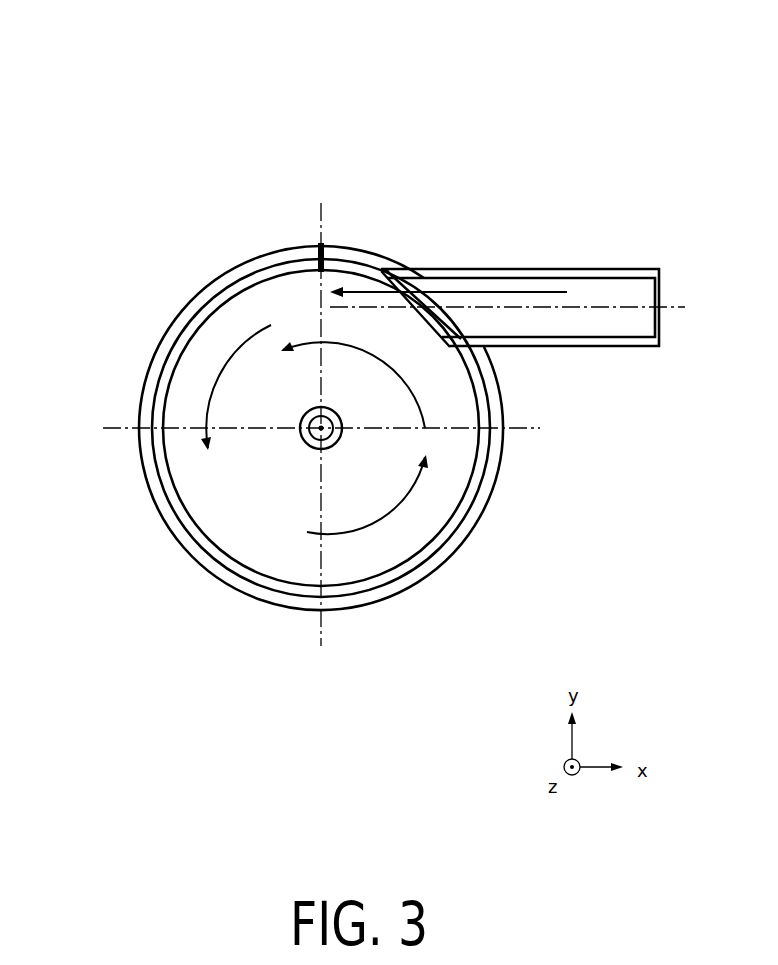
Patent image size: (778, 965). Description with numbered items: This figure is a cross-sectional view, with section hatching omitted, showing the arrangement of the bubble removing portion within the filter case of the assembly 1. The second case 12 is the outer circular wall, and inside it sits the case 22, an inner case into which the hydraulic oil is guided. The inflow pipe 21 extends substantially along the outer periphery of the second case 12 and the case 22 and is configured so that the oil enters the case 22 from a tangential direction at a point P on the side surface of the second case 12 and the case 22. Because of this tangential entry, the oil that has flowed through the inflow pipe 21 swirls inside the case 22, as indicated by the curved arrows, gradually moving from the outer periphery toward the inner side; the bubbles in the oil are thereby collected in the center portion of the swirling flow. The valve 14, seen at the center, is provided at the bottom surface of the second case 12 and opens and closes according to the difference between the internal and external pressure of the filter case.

The blower 1 is at (628, 57).
The second case 12 is at (270, 428).
The valve 14 is at (256, 428).
The inflow pipe 21 is at (507, 273).
The case 22 is at (321, 475).
The point P is at (265, 215).